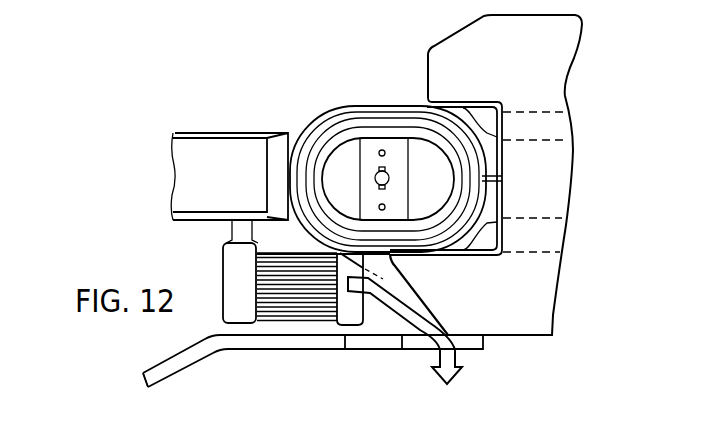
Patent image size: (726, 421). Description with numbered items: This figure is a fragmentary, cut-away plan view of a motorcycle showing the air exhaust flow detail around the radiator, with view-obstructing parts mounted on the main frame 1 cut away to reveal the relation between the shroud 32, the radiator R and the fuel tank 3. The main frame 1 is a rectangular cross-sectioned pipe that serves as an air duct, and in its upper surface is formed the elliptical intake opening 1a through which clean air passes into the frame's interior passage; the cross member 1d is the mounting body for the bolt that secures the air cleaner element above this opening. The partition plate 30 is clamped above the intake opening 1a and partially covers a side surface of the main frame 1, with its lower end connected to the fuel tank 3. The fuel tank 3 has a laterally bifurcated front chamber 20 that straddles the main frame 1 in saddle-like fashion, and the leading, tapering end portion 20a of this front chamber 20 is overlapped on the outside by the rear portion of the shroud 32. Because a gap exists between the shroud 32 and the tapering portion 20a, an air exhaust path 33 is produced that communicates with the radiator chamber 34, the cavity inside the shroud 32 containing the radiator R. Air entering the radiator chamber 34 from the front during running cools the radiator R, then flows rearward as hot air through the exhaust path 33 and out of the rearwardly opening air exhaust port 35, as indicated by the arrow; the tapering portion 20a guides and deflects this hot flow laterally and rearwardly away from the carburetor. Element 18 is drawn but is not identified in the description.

The main frame 1 is at (197, 145).
The intake opening 1a is at (342, 133).
The cross member 1d is at (392, 143).
The fuel tank 3 is at (552, 185).
The light emitting element 18 is at (375, 283).
The front chamber 20 is at (495, 293).
The tapering end portion 20a is at (450, 332).
The partition plate 30 is at (307, 123).
The shroud 32 is at (178, 362).
The air exhaust path 33 is at (392, 323).
The radiator chamber 34 is at (308, 338).
The air exhaust port 35 is at (490, 338).
The radiator R is at (275, 327).